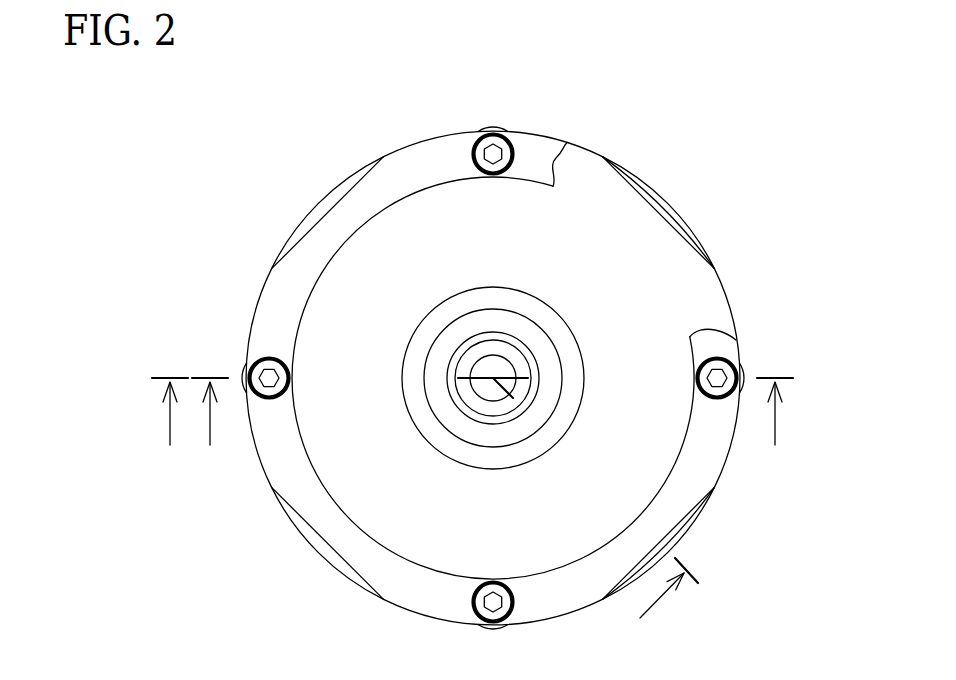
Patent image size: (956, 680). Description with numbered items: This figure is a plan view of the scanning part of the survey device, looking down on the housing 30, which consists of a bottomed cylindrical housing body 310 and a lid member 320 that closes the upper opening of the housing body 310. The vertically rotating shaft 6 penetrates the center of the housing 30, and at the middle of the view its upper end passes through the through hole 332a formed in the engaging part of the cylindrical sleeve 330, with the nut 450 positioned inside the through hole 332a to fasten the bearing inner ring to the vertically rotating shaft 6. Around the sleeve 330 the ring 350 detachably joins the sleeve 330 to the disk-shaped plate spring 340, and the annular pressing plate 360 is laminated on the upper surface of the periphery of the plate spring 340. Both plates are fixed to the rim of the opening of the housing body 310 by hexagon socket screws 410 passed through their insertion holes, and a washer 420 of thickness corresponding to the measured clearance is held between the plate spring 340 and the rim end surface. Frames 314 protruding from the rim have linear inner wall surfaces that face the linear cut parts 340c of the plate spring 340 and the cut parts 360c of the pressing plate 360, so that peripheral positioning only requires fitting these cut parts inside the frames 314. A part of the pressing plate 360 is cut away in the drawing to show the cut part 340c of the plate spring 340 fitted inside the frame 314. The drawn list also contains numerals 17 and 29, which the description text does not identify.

The vertically rotating shaft 6 is at (488, 368).
The housing 17 is at (340, 189).
The motor unit 29 is at (742, 170).
The housing 30 is at (300, 229).
The housing body 310 is at (317, 543).
The frame 314 is at (650, 197).
The lid member 320 is at (420, 143).
The sleeve 330 is at (438, 358).
The through hole 332a is at (465, 408).
The plate spring 340 is at (663, 322).
The cut part 340c is at (680, 237).
The ring 350 is at (537, 313).
The pressing plate 360 is at (270, 305).
The cut part 360c is at (687, 517).
The screw 410 is at (517, 148).
The washer 420 is at (743, 377).
The nut 450 is at (533, 392).